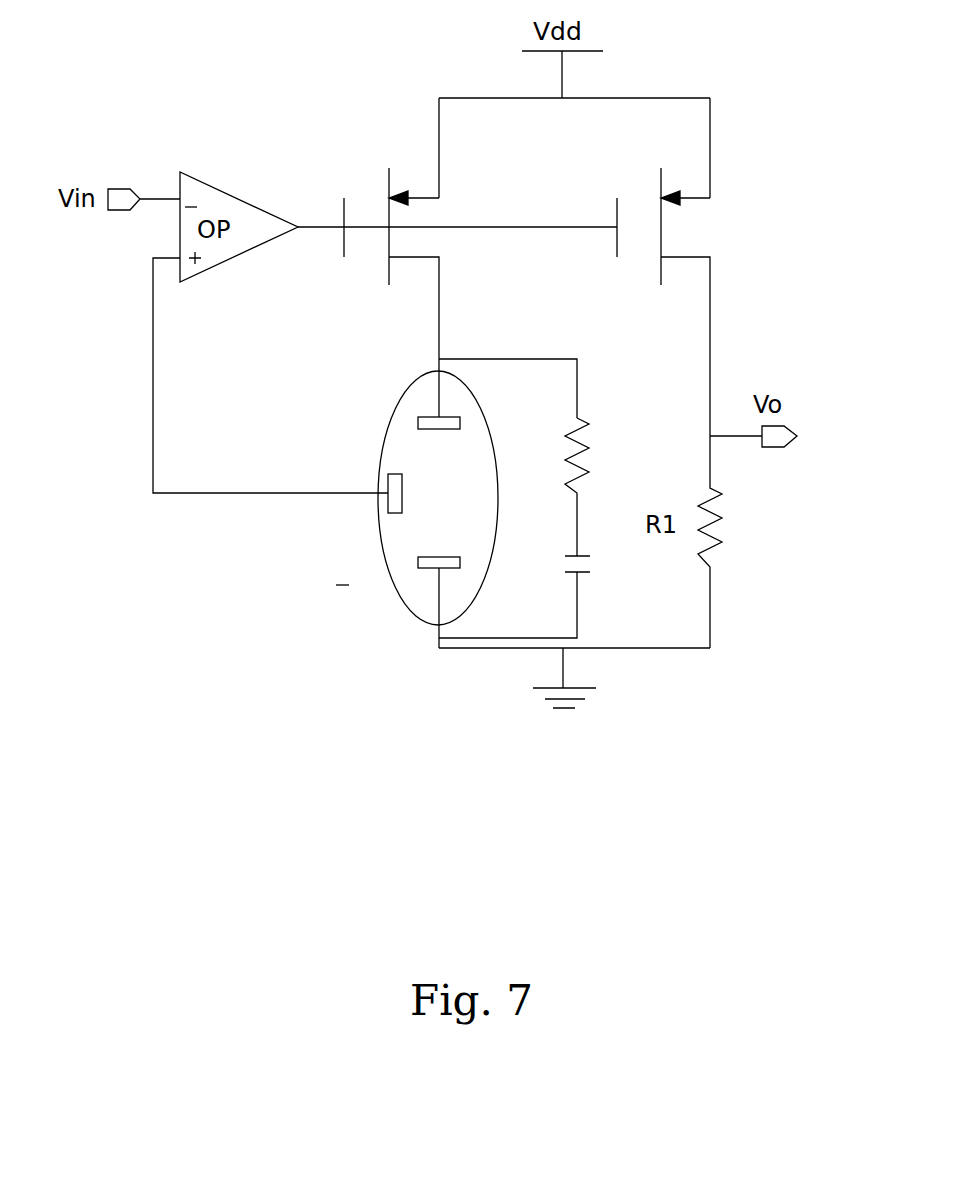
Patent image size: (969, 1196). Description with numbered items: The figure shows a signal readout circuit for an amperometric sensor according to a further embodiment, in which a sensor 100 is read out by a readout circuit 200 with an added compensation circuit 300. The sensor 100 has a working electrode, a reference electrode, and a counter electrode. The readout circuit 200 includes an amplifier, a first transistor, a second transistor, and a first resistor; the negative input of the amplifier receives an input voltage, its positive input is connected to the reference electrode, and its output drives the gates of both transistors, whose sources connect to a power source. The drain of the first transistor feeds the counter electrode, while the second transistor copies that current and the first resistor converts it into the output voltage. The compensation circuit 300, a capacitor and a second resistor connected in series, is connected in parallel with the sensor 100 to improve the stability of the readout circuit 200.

The sensor 100 is at (390, 412).
The readout circuit 200 is at (556, 329).
The compensation circuit 300 is at (600, 518).